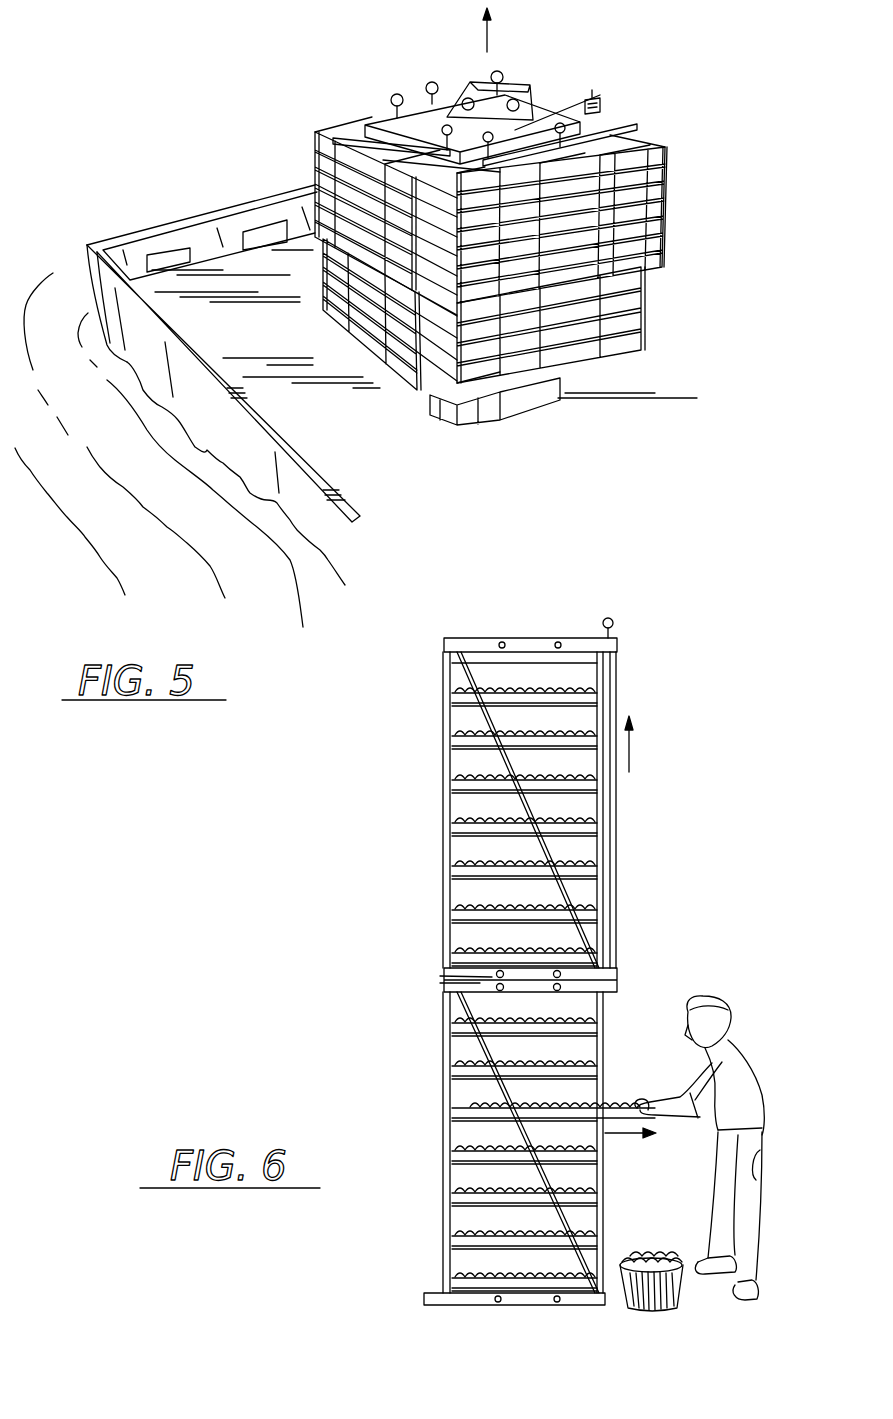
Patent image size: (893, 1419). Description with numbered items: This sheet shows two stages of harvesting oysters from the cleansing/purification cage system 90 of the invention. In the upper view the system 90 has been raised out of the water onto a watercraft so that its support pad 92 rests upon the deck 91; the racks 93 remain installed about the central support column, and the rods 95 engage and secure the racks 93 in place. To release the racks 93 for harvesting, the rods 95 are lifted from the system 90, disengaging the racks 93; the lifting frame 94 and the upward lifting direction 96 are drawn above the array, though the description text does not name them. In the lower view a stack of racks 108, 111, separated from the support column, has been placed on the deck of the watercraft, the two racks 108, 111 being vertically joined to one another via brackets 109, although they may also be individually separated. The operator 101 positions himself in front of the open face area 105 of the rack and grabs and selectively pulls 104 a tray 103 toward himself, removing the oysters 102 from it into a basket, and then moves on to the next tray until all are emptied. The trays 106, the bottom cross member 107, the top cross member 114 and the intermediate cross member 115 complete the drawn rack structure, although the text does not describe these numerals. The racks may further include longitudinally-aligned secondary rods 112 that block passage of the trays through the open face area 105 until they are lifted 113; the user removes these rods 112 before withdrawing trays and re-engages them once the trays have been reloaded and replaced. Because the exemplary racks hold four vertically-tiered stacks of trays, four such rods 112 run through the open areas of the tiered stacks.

In FIG. 5, the system 90 is at (596, 103).
In FIG. 5, the deck 91 is at (598, 440).
In FIG. 5, the support pad 92 is at (478, 425).
In FIG. 5, the racks 93 is at (668, 188).
In FIG. 5, the lifting frame 94 is at (452, 92).
In FIG. 5, the rods 95 is at (443, 126).
In FIG. 5, the lifting direction 96 is at (530, 57).
In FIG. 6, the operator 101 is at (756, 1060).
In FIG. 6, the oysters 102 is at (680, 1282).
In FIG. 6, the tray 103 is at (634, 1100).
In FIG. 6, the pulling 104 is at (655, 1166).
In FIG. 6, the open face area 105 is at (604, 1184).
In FIG. 6, the tray 106 is at (468, 1109).
In FIG. 6, the bottom cross member 107 is at (435, 1298).
In FIG. 6, the rack 108 is at (598, 773).
In FIG. 6, the brackets 109 is at (440, 977).
In FIG. 6, the rack 111 is at (443, 1172).
In FIG. 6, the secondary rods 112 is at (617, 885).
In FIG. 6, the lifting 113 is at (668, 764).
In FIG. 6, the top cross member 114 is at (620, 643).
In FIG. 6, the intermediate cross member 115 is at (619, 978).